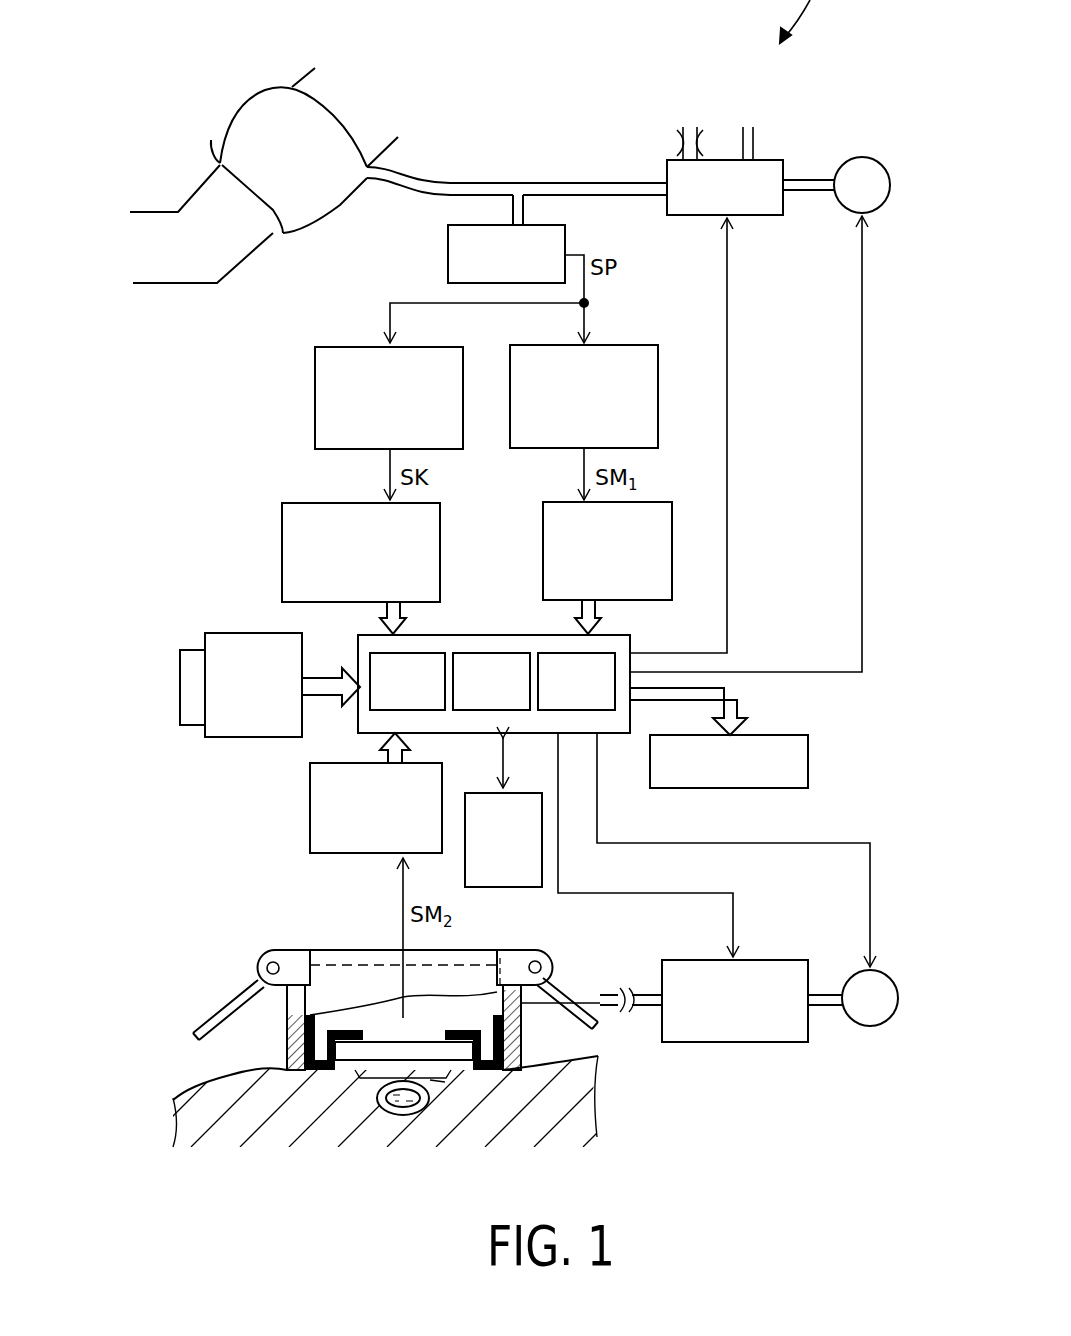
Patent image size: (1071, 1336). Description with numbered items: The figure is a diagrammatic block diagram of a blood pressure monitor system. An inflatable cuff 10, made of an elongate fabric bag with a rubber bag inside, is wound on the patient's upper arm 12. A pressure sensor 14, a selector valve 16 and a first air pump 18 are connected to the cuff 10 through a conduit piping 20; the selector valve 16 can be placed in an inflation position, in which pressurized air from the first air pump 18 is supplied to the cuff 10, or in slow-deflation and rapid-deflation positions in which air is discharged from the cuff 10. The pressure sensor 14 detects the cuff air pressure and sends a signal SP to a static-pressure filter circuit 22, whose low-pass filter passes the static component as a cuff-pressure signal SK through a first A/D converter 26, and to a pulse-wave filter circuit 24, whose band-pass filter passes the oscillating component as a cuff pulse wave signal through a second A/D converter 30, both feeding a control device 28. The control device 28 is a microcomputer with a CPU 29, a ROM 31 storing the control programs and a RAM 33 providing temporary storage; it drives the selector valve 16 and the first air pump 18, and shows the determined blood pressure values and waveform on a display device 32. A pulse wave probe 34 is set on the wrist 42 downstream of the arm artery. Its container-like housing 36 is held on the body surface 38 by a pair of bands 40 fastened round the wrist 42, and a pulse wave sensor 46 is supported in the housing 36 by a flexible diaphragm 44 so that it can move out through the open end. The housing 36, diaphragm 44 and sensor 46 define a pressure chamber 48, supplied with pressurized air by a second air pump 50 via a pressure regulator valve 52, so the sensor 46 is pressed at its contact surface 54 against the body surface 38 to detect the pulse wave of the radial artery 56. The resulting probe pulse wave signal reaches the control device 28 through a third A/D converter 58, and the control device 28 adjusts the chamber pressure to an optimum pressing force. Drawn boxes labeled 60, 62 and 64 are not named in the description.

The inflatable cuff 10 is at (252, 121).
The upper arm 12 is at (257, 222).
The pressure sensor 14 is at (449, 270).
The selector valve 16 is at (777, 165).
The first air pump 18 is at (873, 170).
The conduit piping 20 is at (470, 185).
The static-pressure filter circuit 22 is at (367, 348).
The pulse-wave filter circuit 24 is at (618, 345).
The first analog to digital (A/D) converter 26 is at (282, 537).
The control device 28 is at (505, 629).
The central processing unit (CPU) 29 is at (377, 672).
The second analog to digital (A/D) converter 30 is at (663, 547).
The read only memory (ROM) 31 is at (497, 653).
The display device 32 is at (803, 758).
The random access memory (RAM) 33 is at (607, 658).
The pulse wave probe 34 is at (393, 1018).
The container-like housing 36 is at (287, 1040).
The body surface 38 is at (210, 1075).
The bands 40 is at (225, 1005).
The wrist 42 is at (386, 1108).
The flexible diaphragm 44 is at (303, 1072).
The pulse wave sensor 46 is at (364, 1079).
The pressure chamber 48 is at (438, 1028).
The second air pump 50 is at (878, 1017).
The pressure regulator valve 52 is at (772, 1033).
The contact surface 54 is at (435, 1083).
The radial artery 56 is at (395, 1115).
The third analog to digital (A/D) converter 58 is at (317, 835).
The input device 60 is at (275, 645).
The connector 62 is at (188, 705).
The memory 64 is at (483, 875).